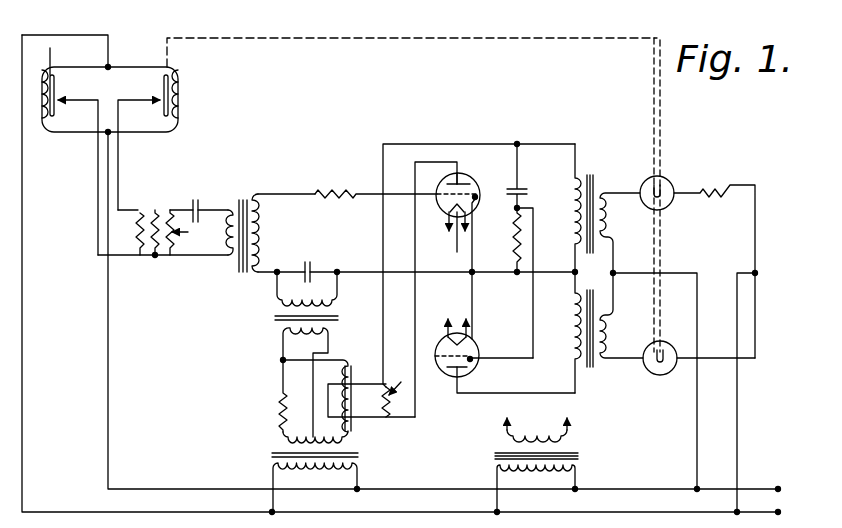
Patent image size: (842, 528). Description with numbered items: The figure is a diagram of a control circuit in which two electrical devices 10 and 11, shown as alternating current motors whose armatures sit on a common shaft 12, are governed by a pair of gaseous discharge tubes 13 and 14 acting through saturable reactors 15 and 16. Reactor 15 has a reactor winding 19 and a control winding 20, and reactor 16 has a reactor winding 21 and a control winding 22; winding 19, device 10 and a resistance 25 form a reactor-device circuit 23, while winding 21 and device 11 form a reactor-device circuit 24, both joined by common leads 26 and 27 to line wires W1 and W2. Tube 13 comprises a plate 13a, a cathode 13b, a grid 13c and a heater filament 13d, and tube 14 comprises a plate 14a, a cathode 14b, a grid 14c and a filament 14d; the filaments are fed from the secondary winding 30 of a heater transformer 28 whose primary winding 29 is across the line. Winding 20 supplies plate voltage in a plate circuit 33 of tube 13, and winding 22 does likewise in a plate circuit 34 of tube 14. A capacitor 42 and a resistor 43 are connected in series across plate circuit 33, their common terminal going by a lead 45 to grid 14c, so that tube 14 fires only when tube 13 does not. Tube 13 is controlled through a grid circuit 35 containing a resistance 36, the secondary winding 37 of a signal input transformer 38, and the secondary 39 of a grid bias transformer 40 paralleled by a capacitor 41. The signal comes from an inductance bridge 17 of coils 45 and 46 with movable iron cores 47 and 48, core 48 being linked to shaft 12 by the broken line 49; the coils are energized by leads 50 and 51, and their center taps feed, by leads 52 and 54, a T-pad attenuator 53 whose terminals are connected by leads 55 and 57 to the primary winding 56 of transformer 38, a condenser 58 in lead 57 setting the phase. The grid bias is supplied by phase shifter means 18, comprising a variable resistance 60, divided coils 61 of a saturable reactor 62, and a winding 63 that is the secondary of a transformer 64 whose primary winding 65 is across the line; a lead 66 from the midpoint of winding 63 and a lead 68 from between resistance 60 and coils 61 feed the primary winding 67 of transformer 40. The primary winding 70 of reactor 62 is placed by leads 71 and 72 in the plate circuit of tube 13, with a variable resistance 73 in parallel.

The electrical device 10 is at (668, 182).
The electrical device 11 is at (658, 373).
The common shaft 12 is at (662, 250).
The electron discharge tube 13 is at (471, 178).
The anode or plate 13a is at (459, 182).
The cathode 13b is at (449, 216).
The control grid 13c is at (478, 192).
The filament 13d is at (459, 243).
The electron discharge tube 14 is at (468, 378).
The anode or plate 14a is at (397, 413).
The cathode 14b is at (473, 337).
The control grid 14c is at (435, 356).
The filament 14d is at (439, 324).
The electrical coupling means 15 is at (593, 174).
The electrical coupling means 16 is at (593, 374).
The alternating current signal means 17 is at (86, 178).
The phase shifter means 18 is at (270, 431).
The reactor winding 19 is at (608, 218).
The control winding 20 is at (572, 194).
The reactor winding 21 is at (608, 336).
The control winding 22 is at (574, 323).
The reactor-device circuit 23 is at (758, 242).
The reactor-device circuit 24 is at (758, 336).
The resistance 25 is at (717, 188).
The common lead 26 is at (698, 338).
The common lead 27 is at (737, 431).
The heater transformer 28 is at (582, 456).
The primary winding 29 is at (538, 476).
The secondary winding 30 is at (535, 435).
The plate circuit 33 is at (550, 147).
The plate circuit 34 is at (544, 390).
The grid circuit 35 is at (278, 210).
The resistance 36 is at (336, 188).
The secondary winding 37 is at (266, 249).
The signal input transformer 38 is at (238, 275).
The secondary winding 39 is at (275, 301).
The grid bias transformer 40 is at (274, 322).
The capacitor 41 is at (313, 267).
The capacitor 42 is at (507, 191).
The resistor 43 is at (514, 243).
The lead 45 is at (50, 72).
The coil 46 is at (183, 80).
The movable iron core 47 is at (56, 94).
The movable iron core 48 is at (163, 94).
The connection 49 is at (425, 40).
The lead 50 is at (23, 397).
The lead 51 is at (110, 397).
The lead 52 is at (120, 154).
The T-pad attenuator 53 is at (155, 206).
The lead 54 is at (98, 160).
The lead 55 is at (189, 262).
The primary winding 56 is at (223, 218).
The lead 57 is at (213, 210).
The condenser 58 is at (197, 199).
The variable resistance 60 is at (276, 403).
The divided coils 61 is at (354, 369).
The saturable reactor 62 is at (366, 444).
The winding 63 is at (305, 438).
The transformer 64 is at (270, 458).
The primary winding 65 is at (313, 477).
The lead 66 is at (332, 340).
The primary winding 67 is at (283, 344).
The lead 68 is at (282, 351).
The primary winding 70 is at (335, 385).
The lead 71 is at (383, 144).
The lead 72 is at (422, 162).
The variable resistance 73 is at (419, 415).
The line wire W1 is at (752, 511).
The line wire W2 is at (660, 488).